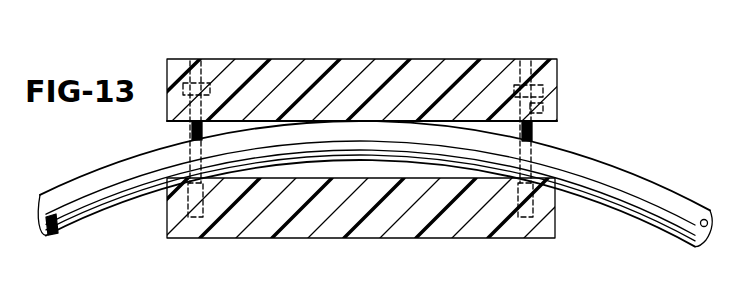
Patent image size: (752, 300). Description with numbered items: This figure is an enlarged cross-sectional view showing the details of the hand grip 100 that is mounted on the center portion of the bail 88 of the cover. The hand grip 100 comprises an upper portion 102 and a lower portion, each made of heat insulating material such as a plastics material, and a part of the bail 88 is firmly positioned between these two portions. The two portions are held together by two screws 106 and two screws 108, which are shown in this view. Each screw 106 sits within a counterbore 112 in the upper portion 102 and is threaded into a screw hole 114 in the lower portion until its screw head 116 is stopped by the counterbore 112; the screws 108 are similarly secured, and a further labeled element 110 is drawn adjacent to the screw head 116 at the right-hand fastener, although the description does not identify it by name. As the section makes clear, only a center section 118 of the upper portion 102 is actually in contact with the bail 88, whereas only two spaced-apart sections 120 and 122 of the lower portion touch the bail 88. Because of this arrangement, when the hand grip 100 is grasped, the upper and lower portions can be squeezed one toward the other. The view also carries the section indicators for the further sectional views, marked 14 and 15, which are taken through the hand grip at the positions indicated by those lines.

The bail 88 is at (375, 184).
The hand grip 100 is at (371, 91).
The upper portion 102 is at (275, 58).
The screw 106 is at (558, 141).
The screw 108 is at (190, 132).
The washer 110 is at (545, 110).
The counterbore 112 is at (520, 60).
The screw hole 114 is at (558, 237).
The screw head 116 is at (541, 92).
The center section 118 is at (355, 118).
The spaced-apart section 120 is at (513, 187).
The spaced-apart section 122 is at (193, 205).
The section line 14- 14 is at (357, 37).
The section line 15- 15 is at (525, 12).